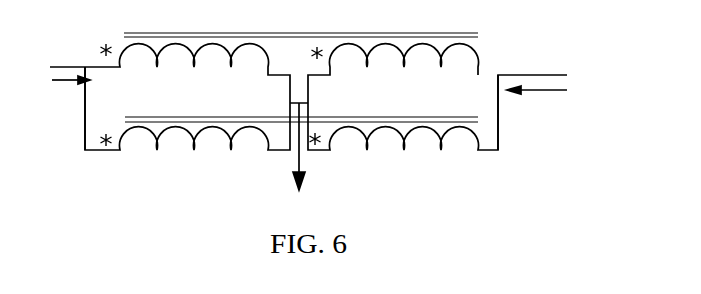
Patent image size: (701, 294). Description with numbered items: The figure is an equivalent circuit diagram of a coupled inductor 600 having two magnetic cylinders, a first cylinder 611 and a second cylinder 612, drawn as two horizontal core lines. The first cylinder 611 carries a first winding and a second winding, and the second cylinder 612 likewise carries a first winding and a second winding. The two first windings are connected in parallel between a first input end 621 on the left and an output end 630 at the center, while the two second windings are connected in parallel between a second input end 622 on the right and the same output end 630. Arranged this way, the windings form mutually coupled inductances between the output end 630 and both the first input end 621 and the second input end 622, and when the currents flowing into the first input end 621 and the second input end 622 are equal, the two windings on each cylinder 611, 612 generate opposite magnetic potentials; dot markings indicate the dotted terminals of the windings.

The coupled inductor 600 is at (303, 107).
The first cylinder 611 is at (282, 34).
The second cylinder 612 is at (284, 117).
The first input end 621 is at (62, 108).
The second input end 622 is at (530, 114).
The output end 630 is at (318, 152).